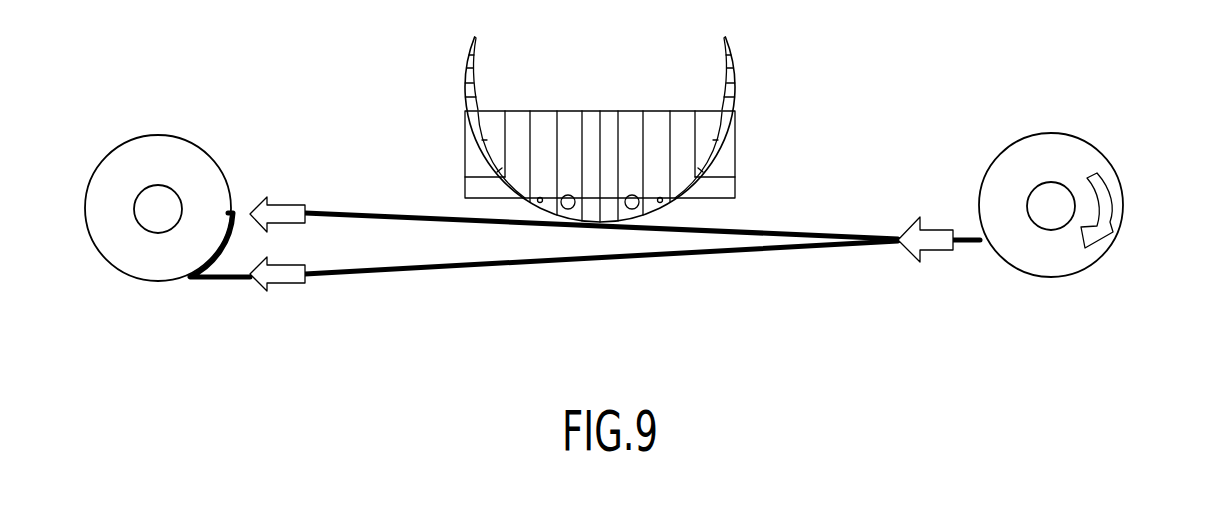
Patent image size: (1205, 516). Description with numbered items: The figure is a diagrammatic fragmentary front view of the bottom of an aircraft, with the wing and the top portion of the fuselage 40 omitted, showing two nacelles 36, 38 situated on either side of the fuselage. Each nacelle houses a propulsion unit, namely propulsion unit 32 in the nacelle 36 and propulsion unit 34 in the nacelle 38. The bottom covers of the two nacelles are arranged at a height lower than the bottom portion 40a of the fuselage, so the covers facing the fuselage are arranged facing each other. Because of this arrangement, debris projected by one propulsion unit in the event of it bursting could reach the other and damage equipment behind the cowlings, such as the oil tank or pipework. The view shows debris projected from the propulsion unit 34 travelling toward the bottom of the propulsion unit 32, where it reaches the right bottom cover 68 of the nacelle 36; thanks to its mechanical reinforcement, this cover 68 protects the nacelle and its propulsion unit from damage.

The propulsion unit 32 is at (129, 218).
The propulsion unit 34 is at (1082, 217).
The nacelle 36 is at (97, 168).
The nacelle 38 is at (1110, 162).
The fuselage 40 is at (749, 108).
The bottom portion of the fuselage 40a is at (677, 217).
The bottom cover 68 is at (228, 245).